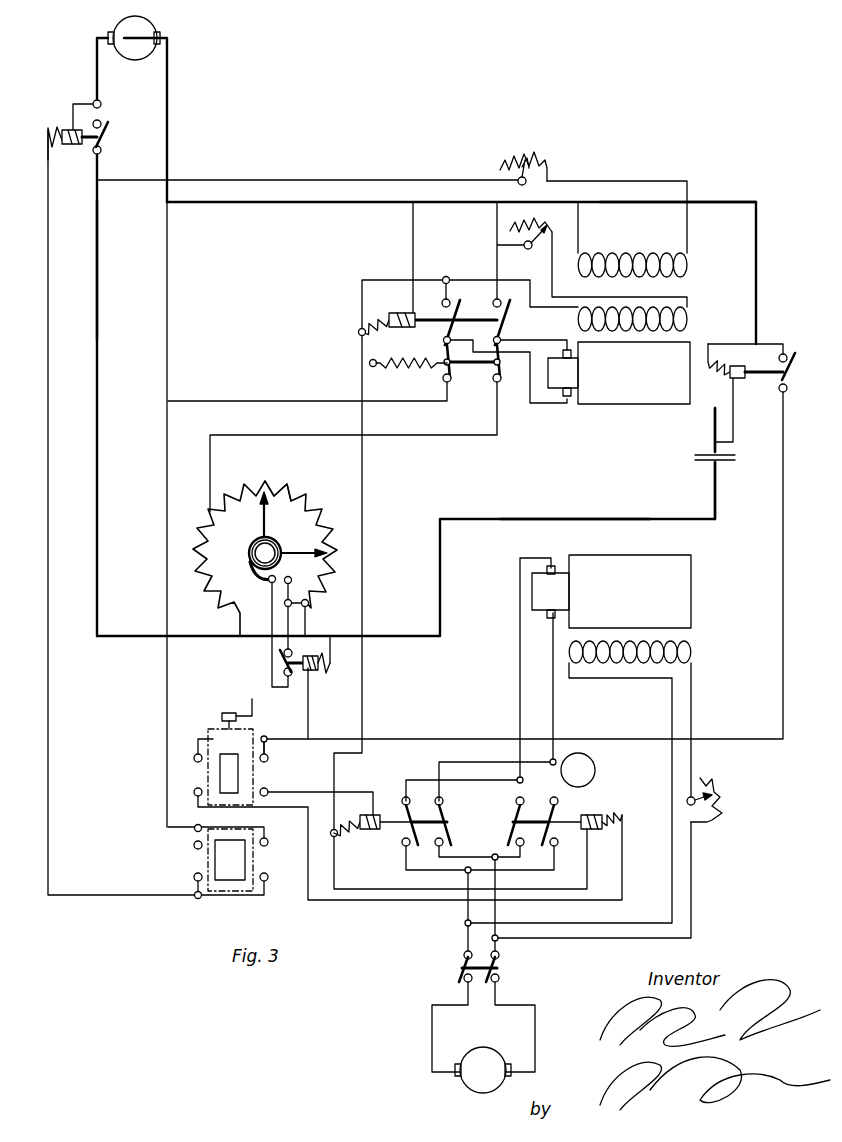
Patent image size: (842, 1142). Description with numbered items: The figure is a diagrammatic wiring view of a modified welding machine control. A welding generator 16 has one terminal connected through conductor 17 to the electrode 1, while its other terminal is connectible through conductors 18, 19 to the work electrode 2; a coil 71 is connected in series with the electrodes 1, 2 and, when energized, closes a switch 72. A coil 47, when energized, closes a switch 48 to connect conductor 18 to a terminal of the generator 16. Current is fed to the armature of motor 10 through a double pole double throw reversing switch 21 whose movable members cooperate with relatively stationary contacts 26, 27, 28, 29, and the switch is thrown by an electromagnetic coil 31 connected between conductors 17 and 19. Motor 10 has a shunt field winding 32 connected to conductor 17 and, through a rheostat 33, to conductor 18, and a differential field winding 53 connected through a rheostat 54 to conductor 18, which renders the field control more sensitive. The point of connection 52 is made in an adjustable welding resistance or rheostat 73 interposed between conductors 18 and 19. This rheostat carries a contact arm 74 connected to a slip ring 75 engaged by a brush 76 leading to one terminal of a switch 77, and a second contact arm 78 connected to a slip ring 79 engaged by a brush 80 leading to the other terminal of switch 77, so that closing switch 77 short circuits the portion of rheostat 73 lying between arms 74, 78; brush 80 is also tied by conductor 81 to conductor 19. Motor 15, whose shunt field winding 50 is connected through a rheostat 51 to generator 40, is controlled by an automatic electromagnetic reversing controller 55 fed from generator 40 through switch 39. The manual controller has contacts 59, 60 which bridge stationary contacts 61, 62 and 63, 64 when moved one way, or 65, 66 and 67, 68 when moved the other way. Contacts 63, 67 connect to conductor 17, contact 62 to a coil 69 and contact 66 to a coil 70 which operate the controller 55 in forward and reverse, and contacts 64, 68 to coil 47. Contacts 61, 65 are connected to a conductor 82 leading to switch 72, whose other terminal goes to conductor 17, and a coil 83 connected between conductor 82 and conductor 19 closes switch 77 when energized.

The electrode 1 is at (715, 431).
The work electrode 2 is at (717, 498).
The motor 10 is at (637, 405).
The motor 15 is at (692, 571).
The welding generator 16 is at (140, 32).
The conductor 17 is at (708, 207).
The conductor 18 is at (98, 278).
The conductor 19 is at (567, 519).
The reversing switch 21 is at (505, 324).
The stationary contact 26 is at (494, 309).
The stationary contact 27 is at (444, 312).
The stationary contact 28 is at (494, 378).
The stationary contact 29 is at (444, 378).
The electromagnetic coil 31 is at (395, 315).
The shunt field winding 32 is at (689, 320).
The rheostat 33 is at (540, 224).
The switch 39 is at (497, 966).
The generator 40 is at (476, 1087).
The coil 47 is at (58, 125).
The switch 48 is at (102, 142).
The shunt field winding 50 is at (692, 656).
The rheostat 51 is at (722, 812).
The point of connection 52 is at (207, 520).
The differential field winding 53 is at (637, 262).
The rheostat 54 is at (540, 166).
The automatic reversing controller 55 is at (578, 770).
The contact 59 is at (240, 779).
The contact 60 is at (244, 864).
The stationary contact 61 is at (268, 757).
The stationary contact 62 is at (270, 791).
The stationary contact 63 is at (268, 841).
The stationary contact 64 is at (268, 878).
The stationary contact 65 is at (194, 756).
The stationary contact 66 is at (194, 791).
The stationary contact 67 is at (194, 845).
The stationary contact 68 is at (194, 878).
The coil 69 is at (358, 830).
The coil 70 is at (607, 815).
The coil 71 is at (718, 381).
The switch 72 is at (786, 379).
The welding rheostat 73 is at (300, 495).
The contact arm 74 is at (275, 514).
The slip ring 75 is at (250, 554).
The brush 76 is at (262, 579).
The switch 77 is at (280, 660).
The contact arm 78 is at (304, 541).
The slip ring 79 is at (275, 545).
The brush 80 is at (289, 581).
The conductor 81 is at (303, 602).
The conductor 82 is at (430, 740).
The coil 83 is at (323, 671).